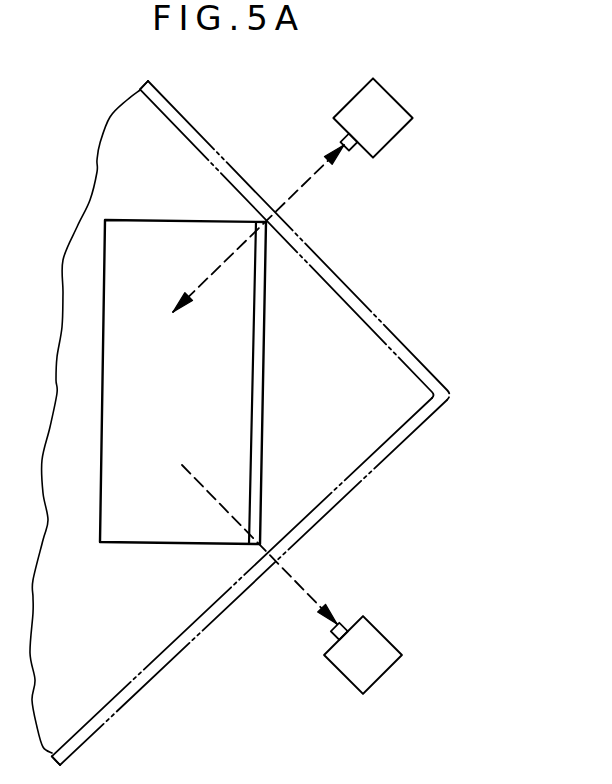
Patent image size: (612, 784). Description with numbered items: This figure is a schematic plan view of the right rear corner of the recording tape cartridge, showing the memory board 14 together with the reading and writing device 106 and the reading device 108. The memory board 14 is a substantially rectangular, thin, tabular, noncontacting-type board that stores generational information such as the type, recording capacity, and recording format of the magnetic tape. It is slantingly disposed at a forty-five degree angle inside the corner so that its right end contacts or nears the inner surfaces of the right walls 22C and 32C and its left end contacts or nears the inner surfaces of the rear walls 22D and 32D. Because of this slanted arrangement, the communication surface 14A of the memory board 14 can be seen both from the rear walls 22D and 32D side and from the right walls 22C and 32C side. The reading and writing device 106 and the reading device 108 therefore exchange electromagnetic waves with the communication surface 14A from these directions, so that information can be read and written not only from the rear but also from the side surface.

The memory board 14 is at (245, 382).
The communication surface 14A is at (232, 357).
The right wall 32C is at (355, 240).
The right wall 22C is at (411, 355).
The rear wall 32D is at (270, 581).
The rear wall 22D is at (326, 520).
The reading and writing device 106 is at (393, 115).
The reading device 108 is at (384, 666).